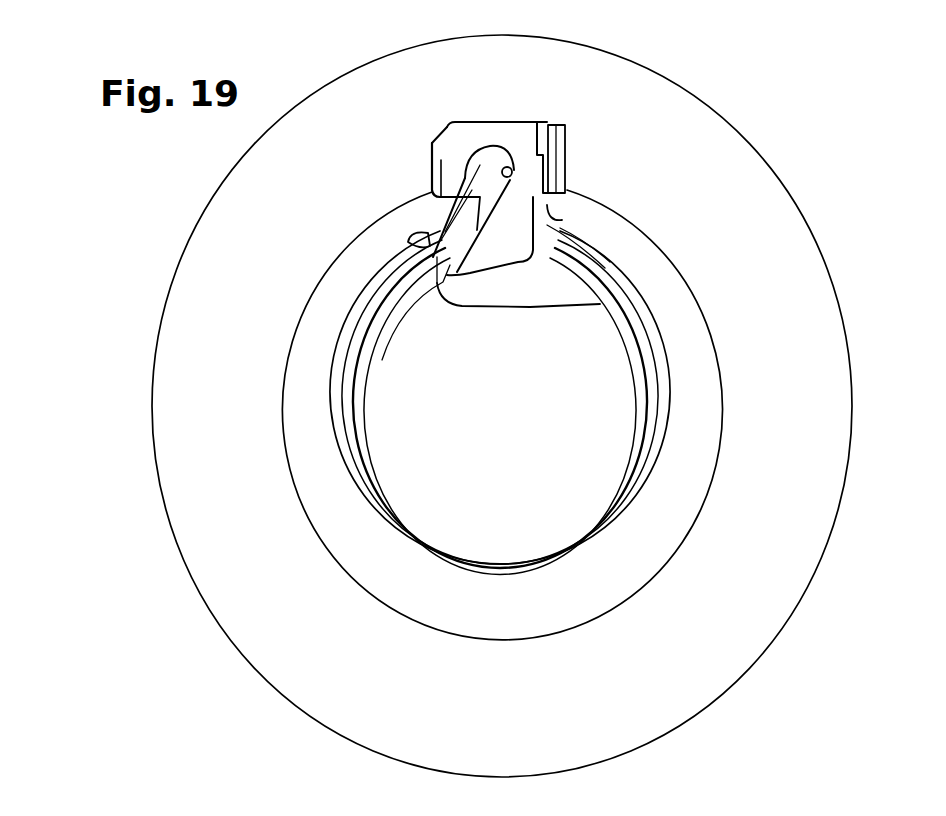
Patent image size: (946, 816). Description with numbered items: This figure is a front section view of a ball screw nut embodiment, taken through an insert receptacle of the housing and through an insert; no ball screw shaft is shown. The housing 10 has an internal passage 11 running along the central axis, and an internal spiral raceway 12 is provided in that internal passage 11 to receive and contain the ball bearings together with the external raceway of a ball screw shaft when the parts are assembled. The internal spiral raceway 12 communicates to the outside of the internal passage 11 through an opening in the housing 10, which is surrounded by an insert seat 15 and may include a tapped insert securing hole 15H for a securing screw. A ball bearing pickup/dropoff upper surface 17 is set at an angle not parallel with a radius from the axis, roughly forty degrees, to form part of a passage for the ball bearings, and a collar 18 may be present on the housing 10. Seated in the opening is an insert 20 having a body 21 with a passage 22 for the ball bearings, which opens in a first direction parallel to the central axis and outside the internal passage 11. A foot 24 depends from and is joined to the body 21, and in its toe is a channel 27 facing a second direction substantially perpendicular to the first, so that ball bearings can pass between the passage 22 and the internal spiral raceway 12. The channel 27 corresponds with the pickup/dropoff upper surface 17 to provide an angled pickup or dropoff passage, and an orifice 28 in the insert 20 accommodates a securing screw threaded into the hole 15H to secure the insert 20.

The housing 10 is at (290, 350).
The internal passage 11 is at (463, 433).
The internal spiral raceway 12 is at (365, 378).
The insert seat 15 is at (432, 158).
The tapped insert securing hole 15H is at (567, 220).
The ball bearing pickup/dropoff upper surface 17 is at (407, 244).
The collar 18 is at (766, 587).
The insert 20 is at (467, 128).
The body 21 is at (470, 122).
The passage 22 is at (513, 172).
The foot 24 is at (507, 243).
The channel 27 is at (600, 304).
The orifice 28 is at (553, 140).